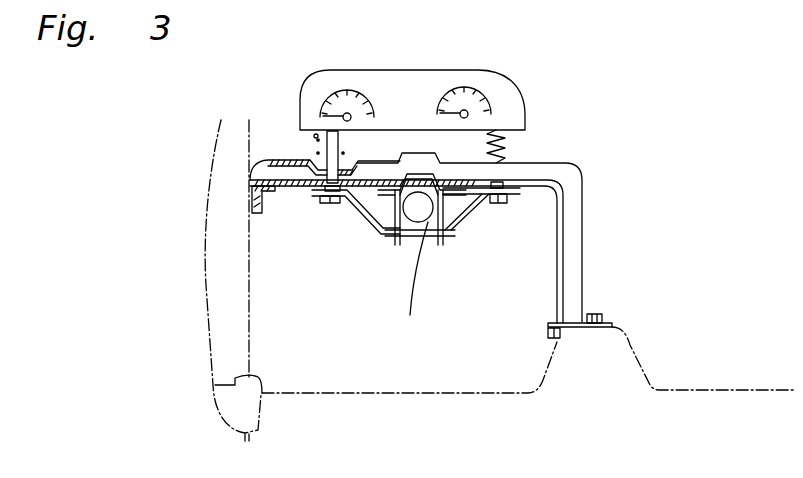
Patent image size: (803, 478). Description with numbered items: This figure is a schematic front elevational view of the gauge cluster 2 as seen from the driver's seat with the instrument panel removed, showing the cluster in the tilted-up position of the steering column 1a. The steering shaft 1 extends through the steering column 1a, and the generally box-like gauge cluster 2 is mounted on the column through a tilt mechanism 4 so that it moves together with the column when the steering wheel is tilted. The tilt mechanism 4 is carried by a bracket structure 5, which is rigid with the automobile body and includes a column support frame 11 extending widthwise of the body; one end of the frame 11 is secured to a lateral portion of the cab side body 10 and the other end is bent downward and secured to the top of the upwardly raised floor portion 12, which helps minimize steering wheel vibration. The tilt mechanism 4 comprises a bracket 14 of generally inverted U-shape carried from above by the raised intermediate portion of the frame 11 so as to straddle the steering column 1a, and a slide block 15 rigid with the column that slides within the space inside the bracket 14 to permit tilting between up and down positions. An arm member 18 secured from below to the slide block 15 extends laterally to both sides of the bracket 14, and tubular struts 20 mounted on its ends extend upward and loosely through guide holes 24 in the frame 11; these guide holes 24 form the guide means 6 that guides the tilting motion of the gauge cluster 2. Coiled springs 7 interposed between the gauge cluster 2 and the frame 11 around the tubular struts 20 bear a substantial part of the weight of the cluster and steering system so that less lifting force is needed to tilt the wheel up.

The steering shaft 1 is at (368, 269).
The steering column 1a is at (410, 216).
The gauge cluster 2 is at (526, 92).
The tilt mechanism 4 is at (433, 246).
The bracket structure 5 is at (493, 245).
The column support frame 11 is at (578, 188).
The guide means 6 is at (267, 151).
The guide holes 24 is at (311, 156).
The coiled springs 7 is at (512, 140).
The cab side body 10 is at (193, 277).
The upwardly raised floor portion 12 is at (608, 398).
The bracket 14 is at (446, 241).
The slide block 15 is at (411, 284).
The arm member 18 is at (357, 216).
The tubular struts 20 is at (327, 133).